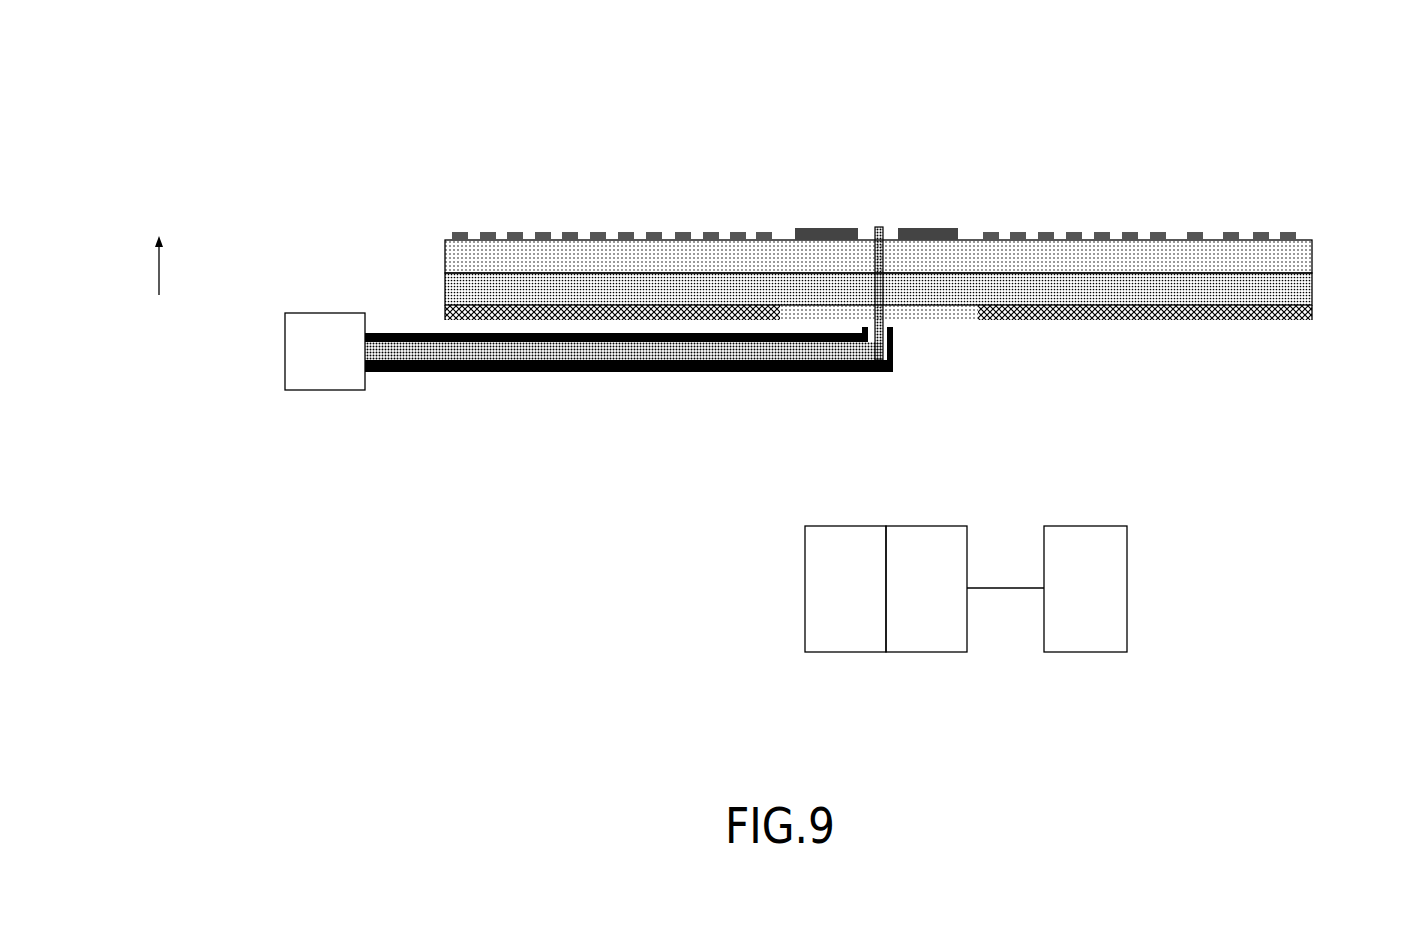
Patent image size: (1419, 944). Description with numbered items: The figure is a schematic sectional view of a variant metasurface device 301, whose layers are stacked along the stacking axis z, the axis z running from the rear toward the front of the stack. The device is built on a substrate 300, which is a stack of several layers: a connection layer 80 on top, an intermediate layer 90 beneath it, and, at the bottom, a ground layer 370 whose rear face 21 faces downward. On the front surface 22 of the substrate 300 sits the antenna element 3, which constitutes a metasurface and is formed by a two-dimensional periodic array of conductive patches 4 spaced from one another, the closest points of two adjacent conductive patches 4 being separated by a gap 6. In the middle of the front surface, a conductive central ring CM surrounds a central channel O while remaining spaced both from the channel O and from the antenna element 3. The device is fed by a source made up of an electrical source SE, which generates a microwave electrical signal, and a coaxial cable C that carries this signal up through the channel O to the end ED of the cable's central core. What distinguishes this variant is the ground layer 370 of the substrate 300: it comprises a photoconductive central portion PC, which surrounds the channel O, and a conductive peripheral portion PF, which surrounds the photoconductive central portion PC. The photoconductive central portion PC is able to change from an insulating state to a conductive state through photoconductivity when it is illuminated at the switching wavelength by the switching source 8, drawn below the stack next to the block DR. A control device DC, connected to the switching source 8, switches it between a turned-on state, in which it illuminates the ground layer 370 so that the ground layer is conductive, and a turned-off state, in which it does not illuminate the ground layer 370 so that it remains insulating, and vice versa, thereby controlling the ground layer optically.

The metasurface device 301 is at (256, 113).
The substrate 300 is at (422, 240).
The connection layer 80 is at (1313, 258).
The intermediate layer 90 is at (1313, 285).
The ground layer 370 is at (1313, 312).
The antenna element 3 is at (437, 233).
The conductive patches 4 is at (463, 228).
The gap 6 is at (555, 231).
The front surface 22 is at (1167, 231).
The rear face 21 is at (1152, 328).
The switching source 8 is at (915, 652).
The conductive central ring CM is at (822, 228).
The end of the central core ED is at (880, 227).
The central channel O is at (884, 240).
The photoconductive central portion PC is at (942, 328).
The conductive peripheral portion PF is at (1052, 320).
The electrical source SE is at (285, 365).
The coaxial cable C is at (452, 380).
The driver DR is at (836, 652).
The control device DC is at (1127, 588).
The stacking axis z is at (147, 265).